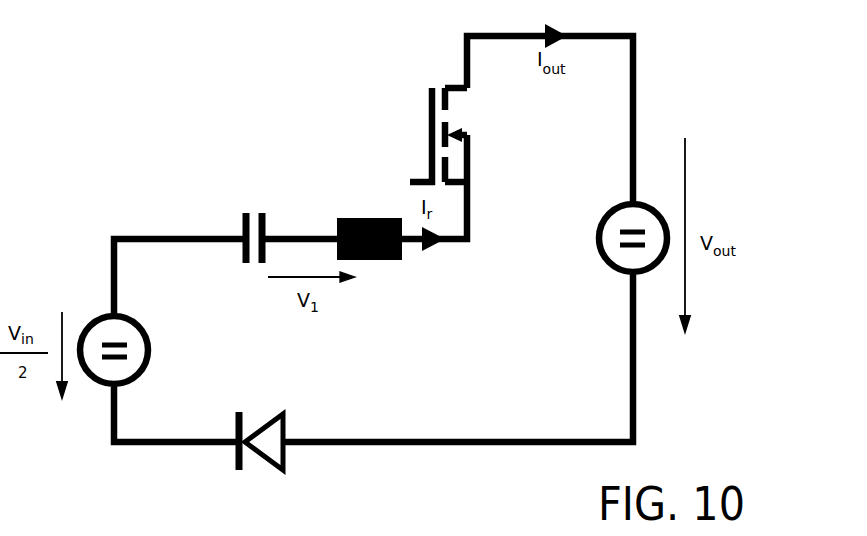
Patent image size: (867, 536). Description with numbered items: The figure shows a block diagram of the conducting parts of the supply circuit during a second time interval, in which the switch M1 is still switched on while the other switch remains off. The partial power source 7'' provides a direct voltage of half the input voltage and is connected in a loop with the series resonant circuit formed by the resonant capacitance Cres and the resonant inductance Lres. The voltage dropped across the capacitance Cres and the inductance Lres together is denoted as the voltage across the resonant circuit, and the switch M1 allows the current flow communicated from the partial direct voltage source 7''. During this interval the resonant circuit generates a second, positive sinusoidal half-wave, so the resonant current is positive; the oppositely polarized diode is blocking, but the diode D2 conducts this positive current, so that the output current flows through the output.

The partial power source 7'' is at (103, 323).
The resonant capacitance Cres is at (245, 222).
The resonant inductance Lres is at (369, 222).
The switch M1 is at (456, 135).
The diode D2 is at (261, 427).